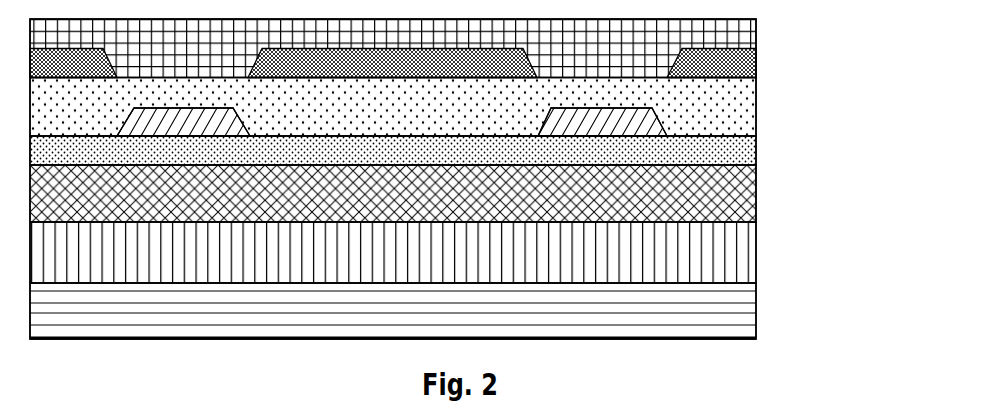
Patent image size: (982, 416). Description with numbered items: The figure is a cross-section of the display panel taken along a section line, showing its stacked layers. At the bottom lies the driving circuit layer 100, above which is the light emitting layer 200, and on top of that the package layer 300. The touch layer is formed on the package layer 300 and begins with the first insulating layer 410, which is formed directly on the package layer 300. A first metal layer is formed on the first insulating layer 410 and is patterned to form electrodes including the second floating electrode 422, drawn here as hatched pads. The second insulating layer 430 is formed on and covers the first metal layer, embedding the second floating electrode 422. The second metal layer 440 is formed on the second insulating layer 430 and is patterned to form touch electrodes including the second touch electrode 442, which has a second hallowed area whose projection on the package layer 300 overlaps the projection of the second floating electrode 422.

The driving circuit layer 100 is at (725, 311).
The light emitting layer 200 is at (727, 252).
The package layer 300 is at (727, 194).
The first insulating layer 410 is at (727, 155).
The second floating electrode 422 is at (620, 125).
The second insulating layer 430 is at (727, 95).
The second metal layer 440 is at (727, 34).
The second touch electrode 442 is at (727, 64).